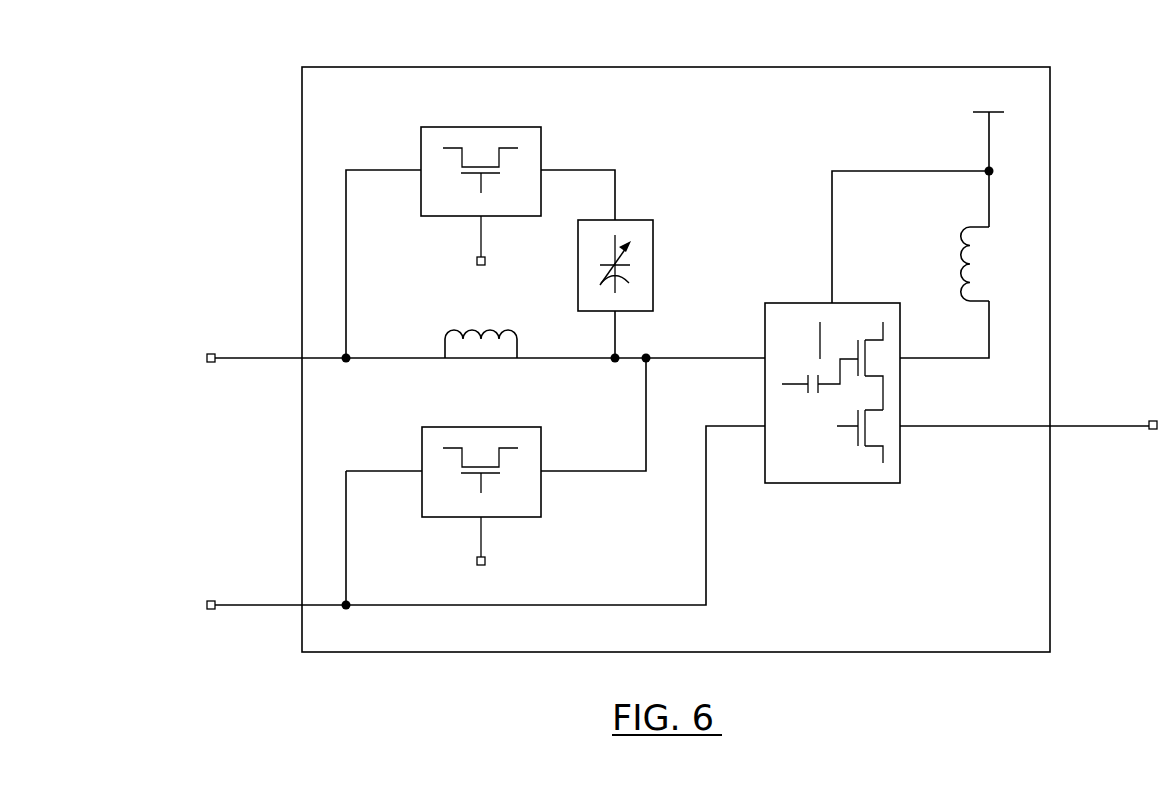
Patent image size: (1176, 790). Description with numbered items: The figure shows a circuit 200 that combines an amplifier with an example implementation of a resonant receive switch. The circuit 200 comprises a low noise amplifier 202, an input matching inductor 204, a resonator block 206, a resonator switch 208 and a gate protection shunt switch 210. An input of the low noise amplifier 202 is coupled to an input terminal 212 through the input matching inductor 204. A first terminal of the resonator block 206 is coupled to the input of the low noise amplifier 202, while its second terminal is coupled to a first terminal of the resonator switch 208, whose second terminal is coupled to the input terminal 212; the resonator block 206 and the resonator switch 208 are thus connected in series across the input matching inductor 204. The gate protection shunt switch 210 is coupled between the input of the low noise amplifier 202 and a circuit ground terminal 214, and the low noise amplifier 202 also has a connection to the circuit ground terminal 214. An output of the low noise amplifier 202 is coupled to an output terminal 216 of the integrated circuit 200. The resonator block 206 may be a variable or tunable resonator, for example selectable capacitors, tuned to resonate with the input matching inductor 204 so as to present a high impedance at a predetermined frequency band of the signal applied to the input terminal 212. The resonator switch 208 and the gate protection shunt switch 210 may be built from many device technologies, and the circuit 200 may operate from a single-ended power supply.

The circuit 200 is at (371, 66).
The low noise amplifier (LNA) 202 is at (797, 303).
The input matching inductor 204 is at (481, 331).
The resonator block 206 is at (641, 220).
The resonator switch 208 is at (452, 126).
The gate protection shunt switch 210 is at (458, 426).
The input terminal 212 is at (298, 358).
The circuit ground terminal 214 is at (298, 605).
The output terminal 216 is at (1053, 428).